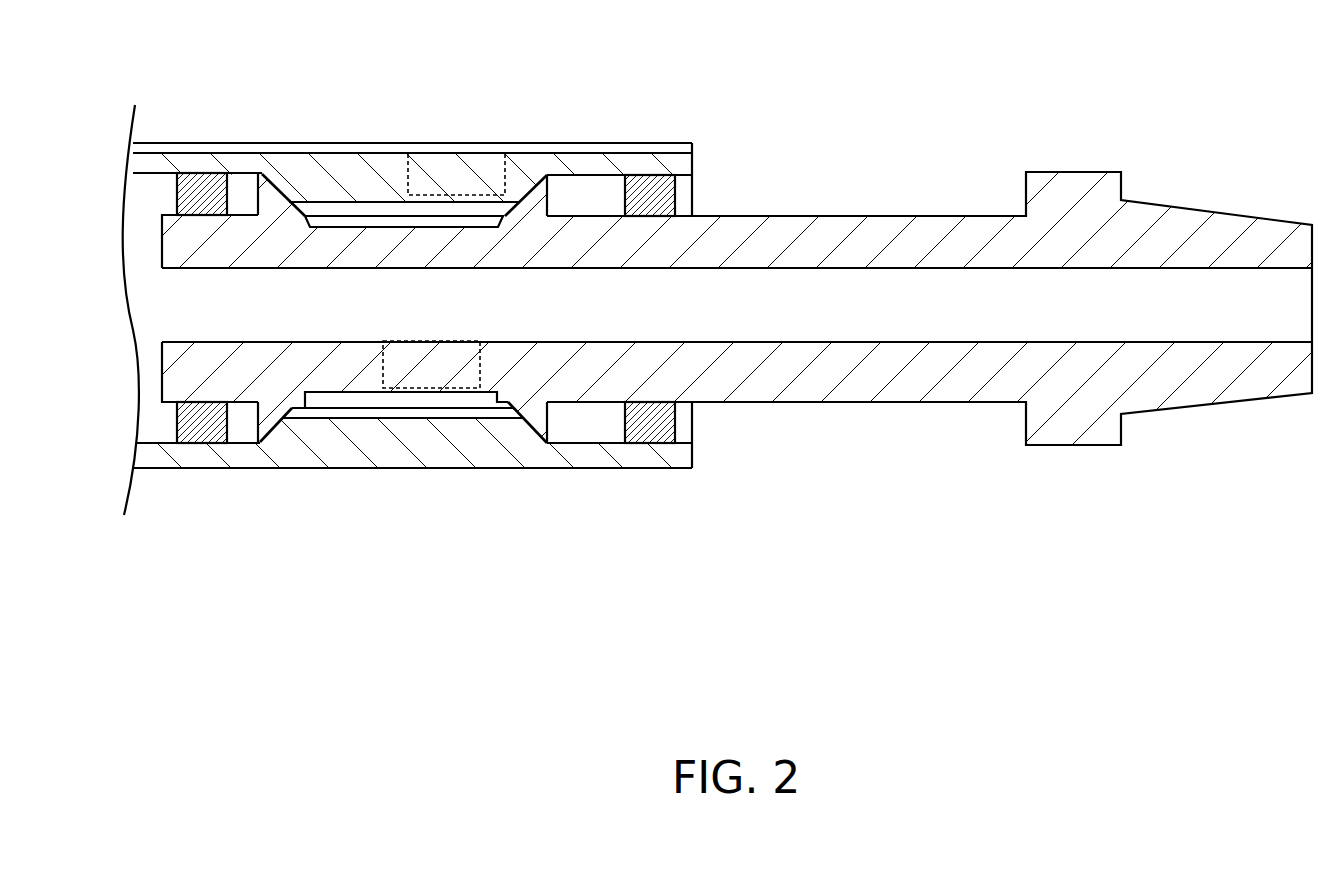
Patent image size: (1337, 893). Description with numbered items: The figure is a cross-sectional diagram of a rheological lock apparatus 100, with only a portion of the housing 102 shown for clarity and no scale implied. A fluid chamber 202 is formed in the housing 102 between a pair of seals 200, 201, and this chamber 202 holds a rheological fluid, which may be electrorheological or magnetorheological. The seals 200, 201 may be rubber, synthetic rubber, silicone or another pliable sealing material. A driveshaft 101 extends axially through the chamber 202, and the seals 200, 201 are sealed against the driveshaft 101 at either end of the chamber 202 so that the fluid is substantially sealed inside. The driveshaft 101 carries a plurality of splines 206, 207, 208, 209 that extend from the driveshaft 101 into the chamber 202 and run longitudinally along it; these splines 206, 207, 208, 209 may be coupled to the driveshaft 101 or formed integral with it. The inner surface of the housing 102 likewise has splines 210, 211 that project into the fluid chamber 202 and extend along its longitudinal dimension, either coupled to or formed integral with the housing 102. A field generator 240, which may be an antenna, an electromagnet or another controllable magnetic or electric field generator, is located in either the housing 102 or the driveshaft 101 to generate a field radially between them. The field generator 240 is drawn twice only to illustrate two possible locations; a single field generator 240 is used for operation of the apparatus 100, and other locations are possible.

The rheological lock apparatus 100 is at (509, 497).
The driveshaft 101 is at (872, 210).
The housing 102 is at (417, 143).
The seal 200 is at (655, 185).
The seal 201 is at (205, 185).
The fluid chamber 202 is at (237, 435).
The spline 206 is at (535, 192).
The spline 207 is at (532, 423).
The spline 208 is at (272, 424).
The spline 209 is at (272, 200).
The spline 210 is at (367, 453).
The spline 211 is at (360, 168).
The field generator 240 is at (491, 165).